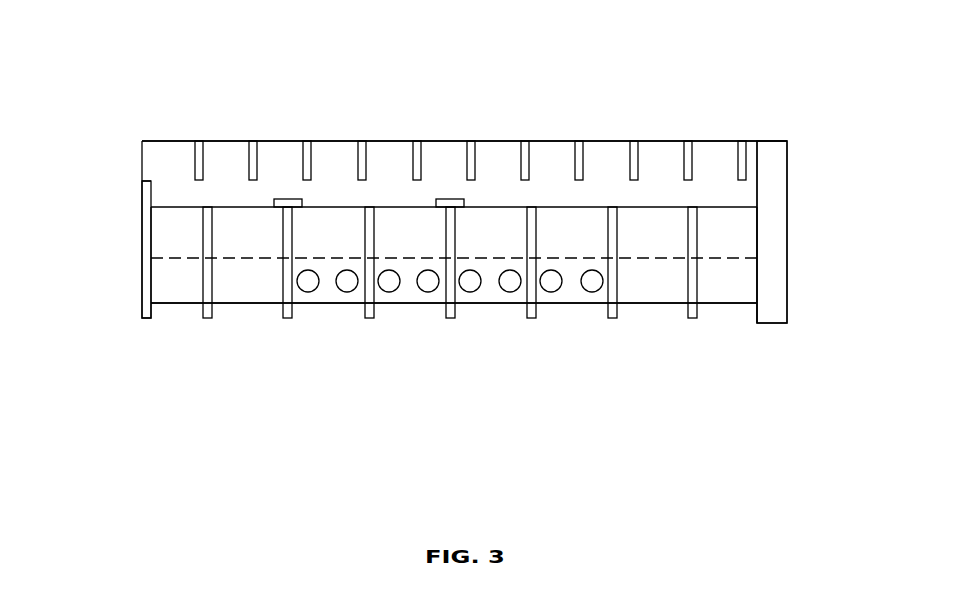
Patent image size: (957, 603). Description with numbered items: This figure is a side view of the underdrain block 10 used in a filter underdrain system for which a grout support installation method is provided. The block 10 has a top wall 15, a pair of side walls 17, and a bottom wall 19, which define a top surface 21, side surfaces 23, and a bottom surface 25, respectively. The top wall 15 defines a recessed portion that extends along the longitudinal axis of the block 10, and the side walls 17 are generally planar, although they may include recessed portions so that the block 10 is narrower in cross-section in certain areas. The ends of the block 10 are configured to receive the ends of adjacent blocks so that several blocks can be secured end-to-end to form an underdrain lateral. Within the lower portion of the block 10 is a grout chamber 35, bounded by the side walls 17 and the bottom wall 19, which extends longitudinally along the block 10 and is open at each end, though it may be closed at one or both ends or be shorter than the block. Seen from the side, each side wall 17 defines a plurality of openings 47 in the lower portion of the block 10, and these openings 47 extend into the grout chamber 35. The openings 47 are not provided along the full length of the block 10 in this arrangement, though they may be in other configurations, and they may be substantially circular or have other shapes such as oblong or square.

The underdrain block 10 is at (157, 99).
The top wall 15 is at (442, 140).
The top surface 21 is at (553, 140).
The side wall 17 is at (745, 241).
The side surface 23 is at (745, 277).
The grout chamber 35 is at (172, 287).
The bottom wall 19 is at (240, 303).
The bottom surface 25 is at (468, 305).
The openings 47 is at (305, 291).